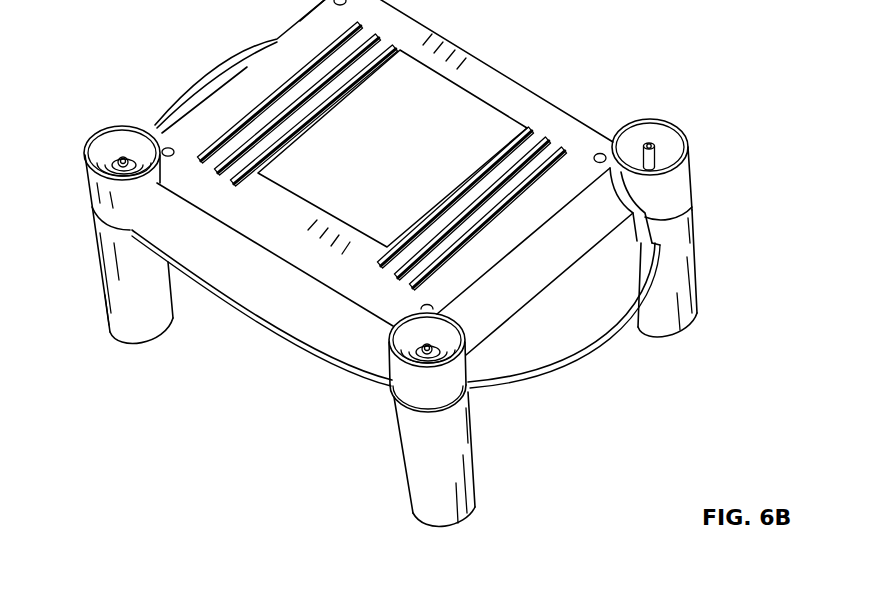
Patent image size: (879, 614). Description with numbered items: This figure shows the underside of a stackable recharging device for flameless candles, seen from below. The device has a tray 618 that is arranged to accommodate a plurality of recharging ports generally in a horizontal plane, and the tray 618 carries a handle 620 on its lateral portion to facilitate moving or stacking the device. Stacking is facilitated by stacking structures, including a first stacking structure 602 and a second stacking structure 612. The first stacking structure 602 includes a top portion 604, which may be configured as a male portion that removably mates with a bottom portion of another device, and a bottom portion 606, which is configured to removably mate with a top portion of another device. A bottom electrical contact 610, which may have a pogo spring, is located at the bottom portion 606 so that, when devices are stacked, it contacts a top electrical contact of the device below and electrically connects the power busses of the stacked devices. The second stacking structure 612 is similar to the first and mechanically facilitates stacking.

The first stacking structure 602 is at (100, 262).
The top portion 604 is at (140, 347).
The bottom portion 606 is at (137, 127).
The bottom electrical contact 610 is at (122, 160).
The second stacking structure 612 is at (298, 0).
The tray 618 is at (282, 340).
The handle 620 is at (603, 340).